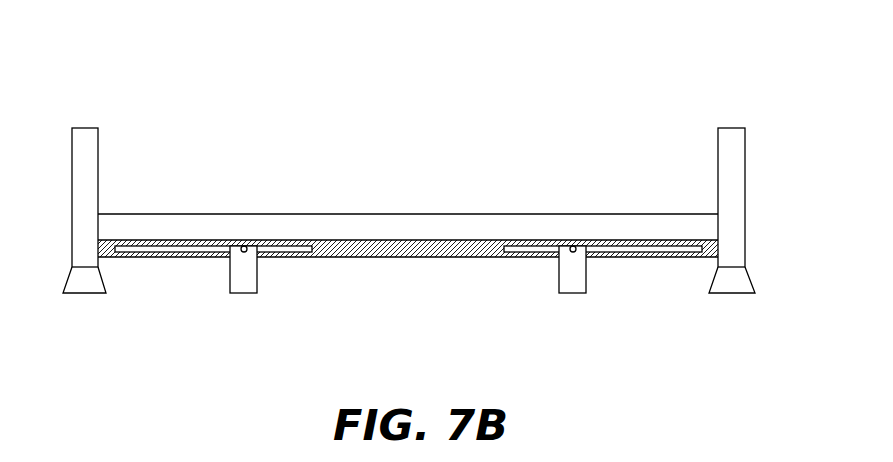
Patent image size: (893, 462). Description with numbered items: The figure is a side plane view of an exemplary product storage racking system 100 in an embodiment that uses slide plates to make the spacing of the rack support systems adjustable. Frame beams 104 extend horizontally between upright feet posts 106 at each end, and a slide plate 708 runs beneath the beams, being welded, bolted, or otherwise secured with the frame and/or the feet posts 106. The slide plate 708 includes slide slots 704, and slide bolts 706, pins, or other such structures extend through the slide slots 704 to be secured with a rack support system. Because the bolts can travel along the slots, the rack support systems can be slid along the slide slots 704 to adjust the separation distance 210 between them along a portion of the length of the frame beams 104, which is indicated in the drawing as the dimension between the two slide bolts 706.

The product storage racking system 100 is at (160, 97).
The frame beam 104 is at (428, 220).
The feet post 106 is at (74, 166).
The slide slot 704 is at (292, 248).
The slide bolt 706 is at (245, 247).
The slide plate 708 is at (397, 253).
The separation distance 210 is at (559, 377).